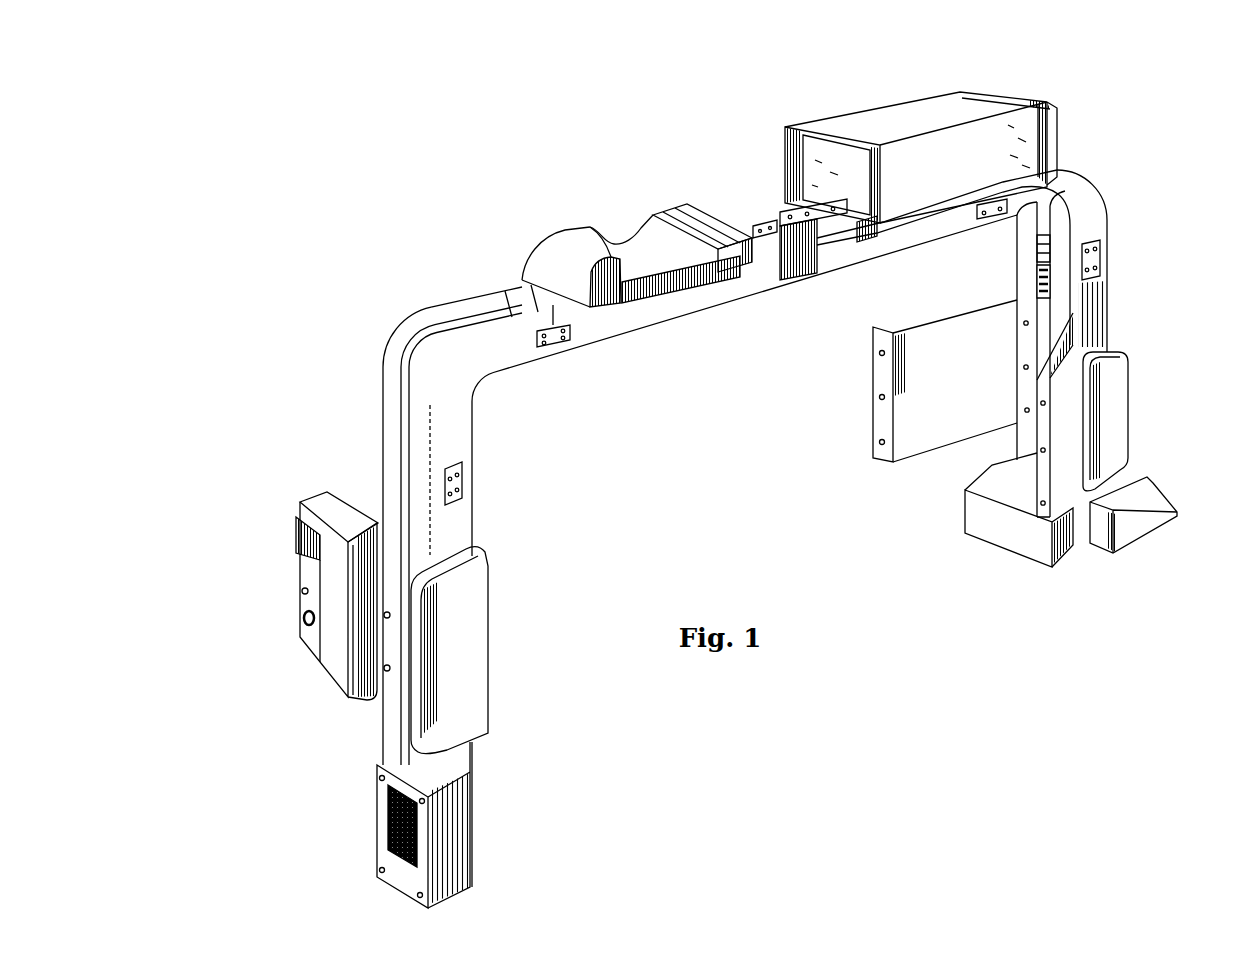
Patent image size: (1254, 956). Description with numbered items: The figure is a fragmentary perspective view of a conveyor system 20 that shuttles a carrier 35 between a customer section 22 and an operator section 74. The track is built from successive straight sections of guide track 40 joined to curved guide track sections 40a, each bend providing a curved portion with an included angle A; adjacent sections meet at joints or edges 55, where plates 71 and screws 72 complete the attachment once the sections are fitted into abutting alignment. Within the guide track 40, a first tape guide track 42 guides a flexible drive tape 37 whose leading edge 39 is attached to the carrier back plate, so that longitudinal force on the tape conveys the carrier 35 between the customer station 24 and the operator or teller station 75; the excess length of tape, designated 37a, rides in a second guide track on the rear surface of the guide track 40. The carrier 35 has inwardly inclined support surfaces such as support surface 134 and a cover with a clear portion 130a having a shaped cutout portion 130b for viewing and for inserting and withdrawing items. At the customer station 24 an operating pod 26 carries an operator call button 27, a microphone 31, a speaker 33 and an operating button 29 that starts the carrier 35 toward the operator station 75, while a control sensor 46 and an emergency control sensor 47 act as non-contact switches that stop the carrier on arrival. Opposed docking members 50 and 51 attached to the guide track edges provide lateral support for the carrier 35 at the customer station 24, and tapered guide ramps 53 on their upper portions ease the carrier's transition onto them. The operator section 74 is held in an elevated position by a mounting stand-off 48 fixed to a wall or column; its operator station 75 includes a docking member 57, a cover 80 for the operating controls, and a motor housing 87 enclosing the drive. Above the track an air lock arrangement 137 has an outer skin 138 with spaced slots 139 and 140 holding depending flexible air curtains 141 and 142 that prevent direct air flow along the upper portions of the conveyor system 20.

The conveyor system 20 is at (340, 337).
The customer section 22 is at (250, 522).
The customer station 24 is at (327, 689).
The operating pod 26 is at (320, 503).
The operator call button 27 is at (303, 618).
The operating button 29 is at (302, 591).
The microphone 31 is at (297, 537).
The speaker 33 is at (388, 823).
The carrier 35 is at (594, 216).
The drive tape 37 is at (833, 236).
The excess length of drive tape 37a is at (1037, 278).
The leading edge of drive tape 39 is at (1047, 242).
The guide track 40 is at (476, 512).
The curved guide track section 40a is at (406, 315).
The first tape guide track 42 is at (407, 414).
The control sensor 46 is at (385, 619).
The emergency control sensor 47 is at (386, 672).
The mounting stand-off 48 is at (923, 440).
The docking member 50 is at (348, 633).
The docking member 51 is at (438, 700).
The tapered guide ramp 53 is at (419, 594).
The joint or edge 55 is at (443, 476).
The docking member 57 is at (1093, 446).
The plate 71 is at (553, 347).
The screw 72 is at (571, 338).
The operator section 74 is at (1111, 337).
The operator or teller station 75 is at (1131, 408).
The cover 80 is at (1133, 523).
The motor housing 87 is at (995, 530).
The clear portion of cover 130a is at (652, 235).
The shaped cutout portion 130b is at (627, 240).
The support surface 134 is at (720, 263).
The air lock arrangement 137 is at (916, 93).
The outer skin or enclosure portion 138 is at (890, 115).
The slot 139 is at (962, 92).
The slot 140 is at (820, 125).
The flexible air seal or curtain 141 is at (1027, 137).
The flexible air seal or curtain 142 is at (810, 158).
The included angle A is at (513, 370).